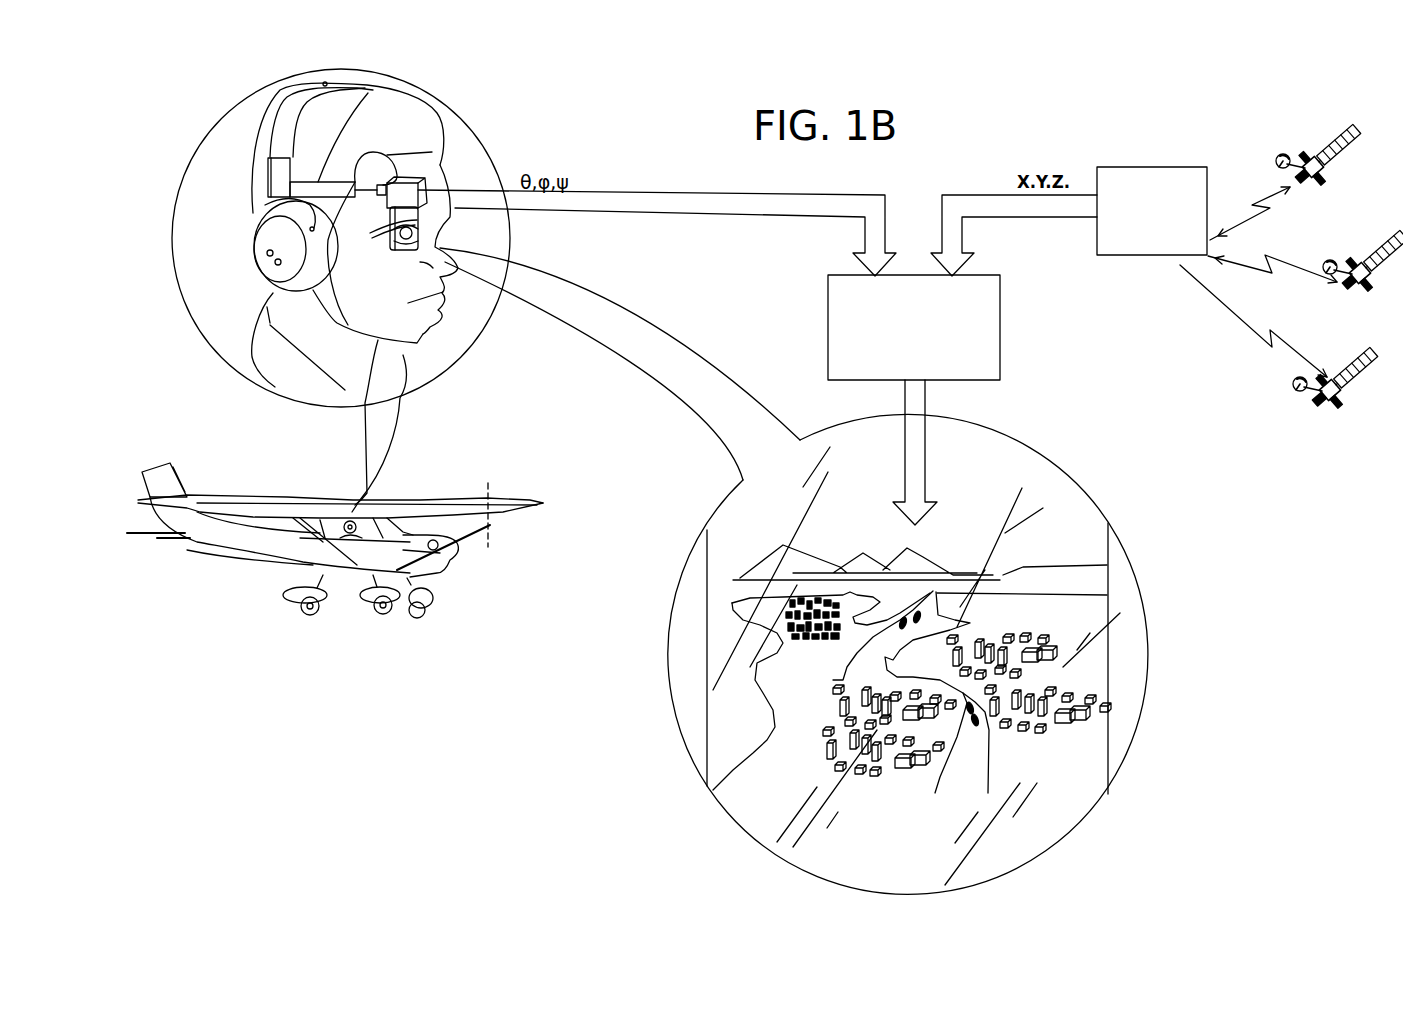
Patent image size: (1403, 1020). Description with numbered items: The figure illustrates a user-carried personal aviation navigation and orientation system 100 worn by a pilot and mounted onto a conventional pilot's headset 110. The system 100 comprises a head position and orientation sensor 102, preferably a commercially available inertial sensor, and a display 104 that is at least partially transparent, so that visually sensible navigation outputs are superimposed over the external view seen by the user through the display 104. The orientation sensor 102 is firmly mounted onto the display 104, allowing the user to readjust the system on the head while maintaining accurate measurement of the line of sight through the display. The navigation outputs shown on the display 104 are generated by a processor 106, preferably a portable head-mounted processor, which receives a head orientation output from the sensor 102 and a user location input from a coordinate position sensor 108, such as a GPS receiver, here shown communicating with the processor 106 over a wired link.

The personal aviation navigation and orientation system 100 is at (260, 175).
The head position and orientation sensor 102 is at (420, 187).
The display 104 is at (732, 737).
The processor 106 is at (400, 177).
The coordinate position sensor 108 is at (1153, 167).
The pilot's headset 110 is at (280, 132).